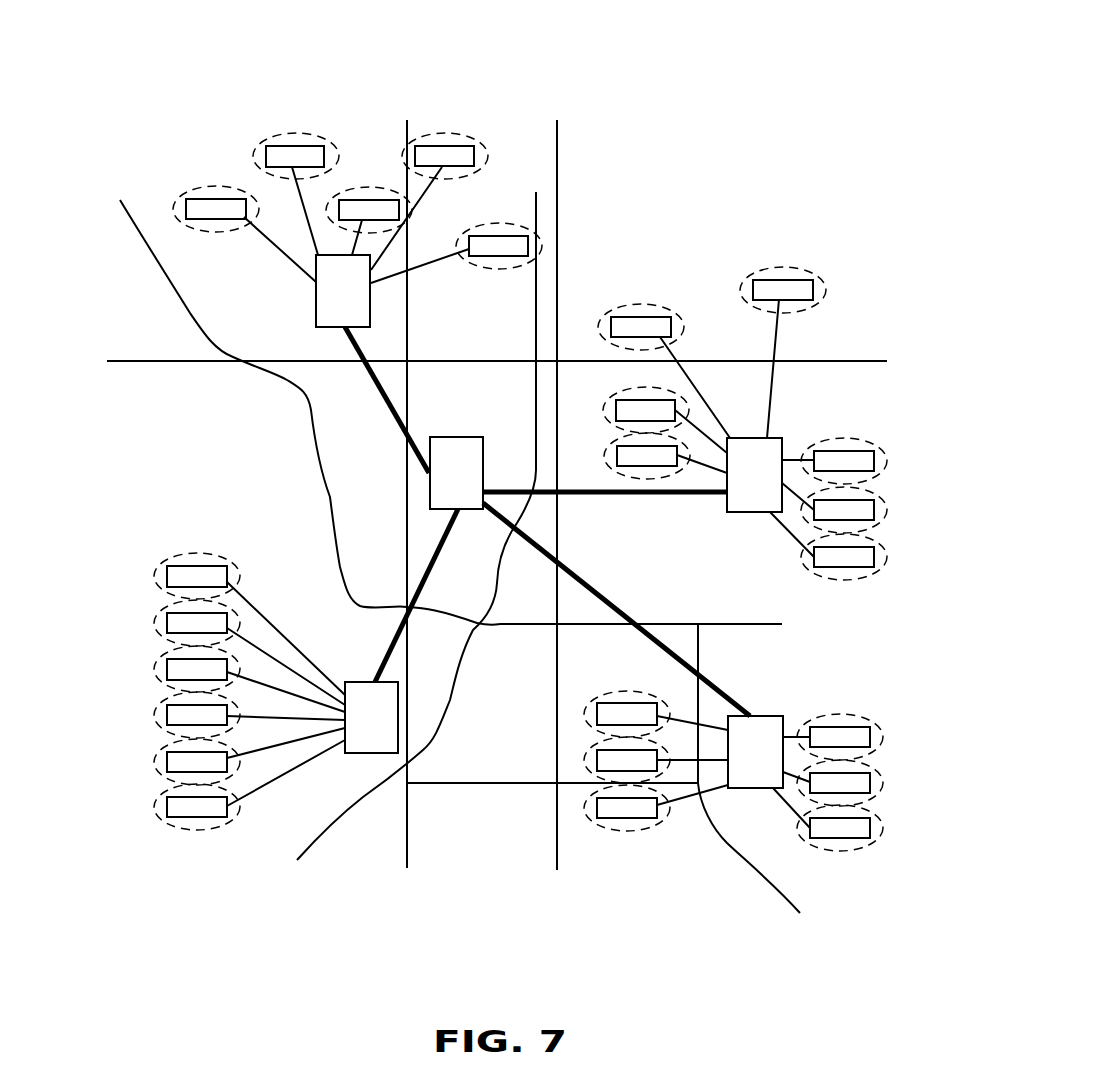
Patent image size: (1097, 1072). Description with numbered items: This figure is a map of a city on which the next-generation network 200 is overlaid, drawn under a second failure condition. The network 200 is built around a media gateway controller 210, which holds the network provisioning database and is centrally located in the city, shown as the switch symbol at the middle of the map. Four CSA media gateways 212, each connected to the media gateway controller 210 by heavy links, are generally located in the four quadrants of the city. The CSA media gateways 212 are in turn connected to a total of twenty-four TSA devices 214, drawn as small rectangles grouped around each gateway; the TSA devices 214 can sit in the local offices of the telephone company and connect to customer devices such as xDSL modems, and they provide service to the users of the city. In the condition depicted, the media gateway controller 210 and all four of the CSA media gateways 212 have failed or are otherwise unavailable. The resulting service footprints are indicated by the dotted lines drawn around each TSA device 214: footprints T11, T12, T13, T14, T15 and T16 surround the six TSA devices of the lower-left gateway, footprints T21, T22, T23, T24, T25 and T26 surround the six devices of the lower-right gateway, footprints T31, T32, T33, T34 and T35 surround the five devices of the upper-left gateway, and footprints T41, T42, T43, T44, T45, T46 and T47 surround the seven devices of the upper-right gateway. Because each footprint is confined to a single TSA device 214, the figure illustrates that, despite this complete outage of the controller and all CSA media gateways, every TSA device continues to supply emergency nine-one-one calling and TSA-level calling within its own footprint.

The network 200 is at (808, 90).
The media gateway controller 210 is at (465, 437).
The CSA media gateway 212 is at (316, 312).
The TSA device 214 is at (266, 156).
The service footprint T11 is at (200, 552).
The service footprint T12 is at (232, 603).
The service footprint T13 is at (243, 653).
The service footprint T14 is at (237, 730).
The service footprint T15 is at (232, 773).
The service footprint T16 is at (175, 826).
The service footprint T21 is at (608, 691).
The service footprint T22 is at (668, 775).
The service footprint T23 is at (648, 831).
The service footprint T24 is at (843, 713).
The service footprint T25 is at (800, 791).
The service footprint T26 is at (858, 841).
The service footprint T31 is at (268, 140).
The service footprint T32 is at (220, 230).
The service footprint T33 is at (370, 195).
The service footprint T34 is at (465, 140).
The service footprint T35 is at (500, 262).
The service footprint T41 is at (805, 268).
The service footprint T42 is at (622, 306).
The service footprint T43 is at (640, 386).
The service footprint T44 is at (643, 480).
The service footprint T45 is at (870, 440).
The service footprint T46 is at (800, 520).
The service footprint T47 is at (801, 574).